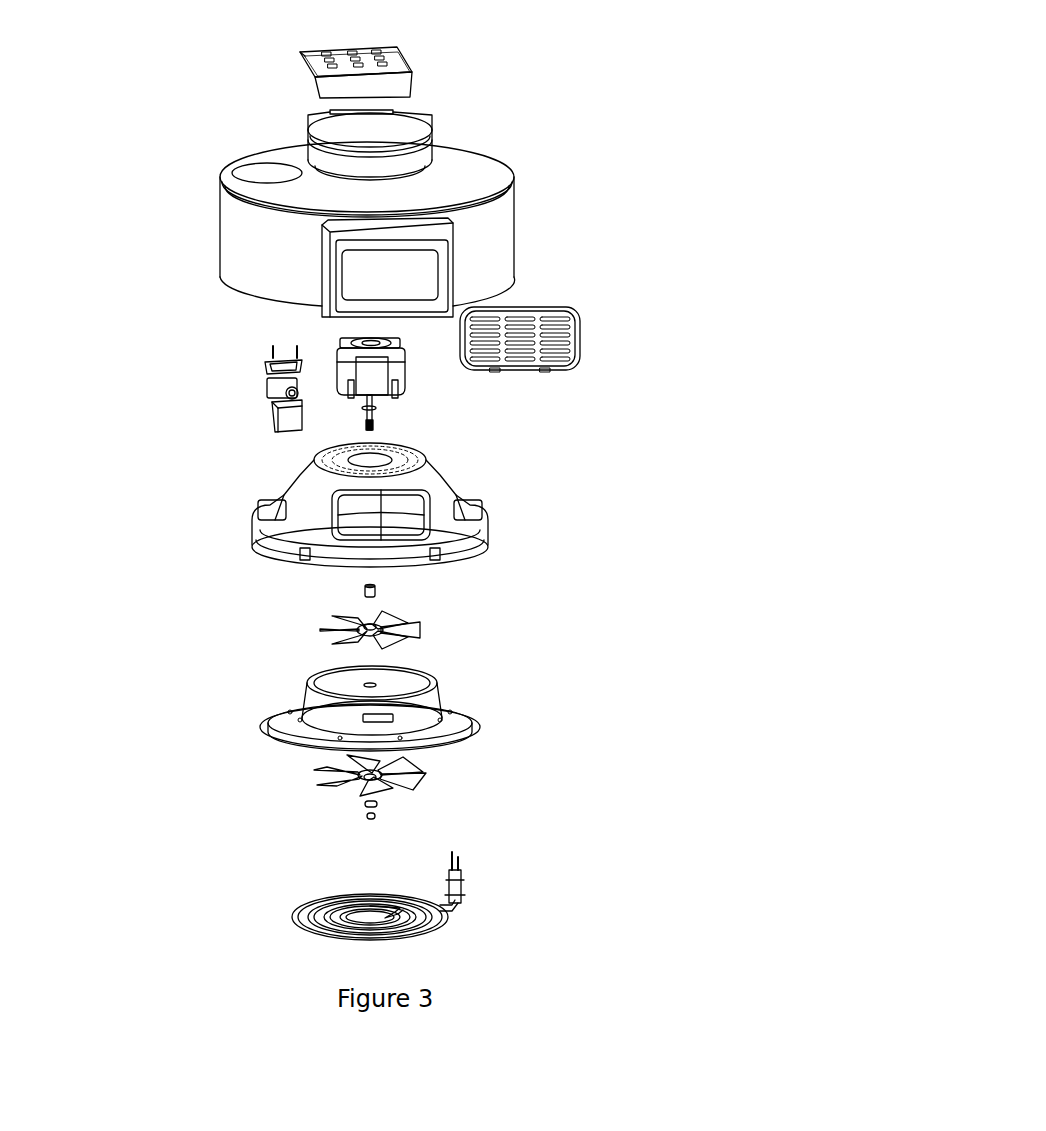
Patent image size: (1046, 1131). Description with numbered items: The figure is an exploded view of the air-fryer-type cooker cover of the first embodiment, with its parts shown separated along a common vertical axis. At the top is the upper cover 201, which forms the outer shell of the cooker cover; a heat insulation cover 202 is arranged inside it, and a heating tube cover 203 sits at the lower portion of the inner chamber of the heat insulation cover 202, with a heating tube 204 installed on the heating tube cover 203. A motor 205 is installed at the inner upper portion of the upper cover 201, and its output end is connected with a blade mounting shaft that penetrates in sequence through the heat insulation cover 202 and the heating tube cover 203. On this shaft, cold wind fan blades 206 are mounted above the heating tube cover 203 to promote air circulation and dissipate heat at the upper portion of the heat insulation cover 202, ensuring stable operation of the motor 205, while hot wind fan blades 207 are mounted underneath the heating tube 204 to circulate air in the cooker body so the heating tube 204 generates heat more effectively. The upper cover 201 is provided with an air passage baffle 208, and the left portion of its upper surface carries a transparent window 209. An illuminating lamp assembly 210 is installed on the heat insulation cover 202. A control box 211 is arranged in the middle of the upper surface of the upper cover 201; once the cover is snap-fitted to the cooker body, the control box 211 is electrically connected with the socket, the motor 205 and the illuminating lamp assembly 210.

The upper cover 201 is at (515, 200).
The heat insulation cover 202 is at (267, 507).
The heating tube cover 203 is at (467, 713).
The heating tube 204 is at (463, 898).
The motor 205 is at (377, 409).
The cold wind fan blades 206 is at (422, 632).
The hot wind fan blades 207 is at (310, 783).
The air passage baffle 208 is at (580, 337).
The transparent window 209 is at (262, 172).
The illuminating lamp assembly 210 is at (272, 394).
The control box 211 is at (410, 73).